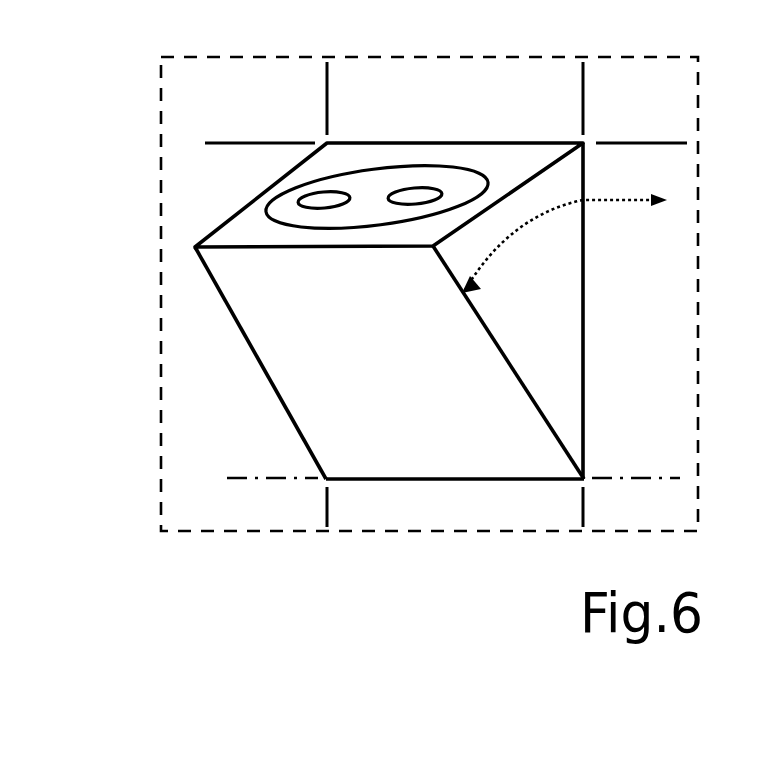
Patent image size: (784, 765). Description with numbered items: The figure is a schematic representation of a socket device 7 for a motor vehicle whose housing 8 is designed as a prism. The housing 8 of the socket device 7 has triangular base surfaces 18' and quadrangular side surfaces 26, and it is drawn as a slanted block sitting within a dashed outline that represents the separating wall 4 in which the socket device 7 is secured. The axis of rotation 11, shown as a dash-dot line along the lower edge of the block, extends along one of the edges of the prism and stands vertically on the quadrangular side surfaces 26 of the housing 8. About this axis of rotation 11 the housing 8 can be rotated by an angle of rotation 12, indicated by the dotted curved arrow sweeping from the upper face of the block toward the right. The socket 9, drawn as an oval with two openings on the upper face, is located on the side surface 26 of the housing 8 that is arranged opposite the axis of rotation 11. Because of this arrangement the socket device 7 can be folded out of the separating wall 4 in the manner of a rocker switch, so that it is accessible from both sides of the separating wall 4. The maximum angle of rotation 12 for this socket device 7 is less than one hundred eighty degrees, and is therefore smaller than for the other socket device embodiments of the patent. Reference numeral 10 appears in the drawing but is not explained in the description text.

The separating wall 4 is at (663, 347).
The socket device 7 is at (197, 270).
The housing 8 is at (272, 336).
The socket 9 is at (368, 205).
The bottom edge 10 is at (457, 478).
The axis of rotation 11 is at (620, 478).
The angle of rotation 12 is at (600, 200).
The triangular base surface 18' is at (600, 311).
The quadrangular side surface 26 is at (516, 166).